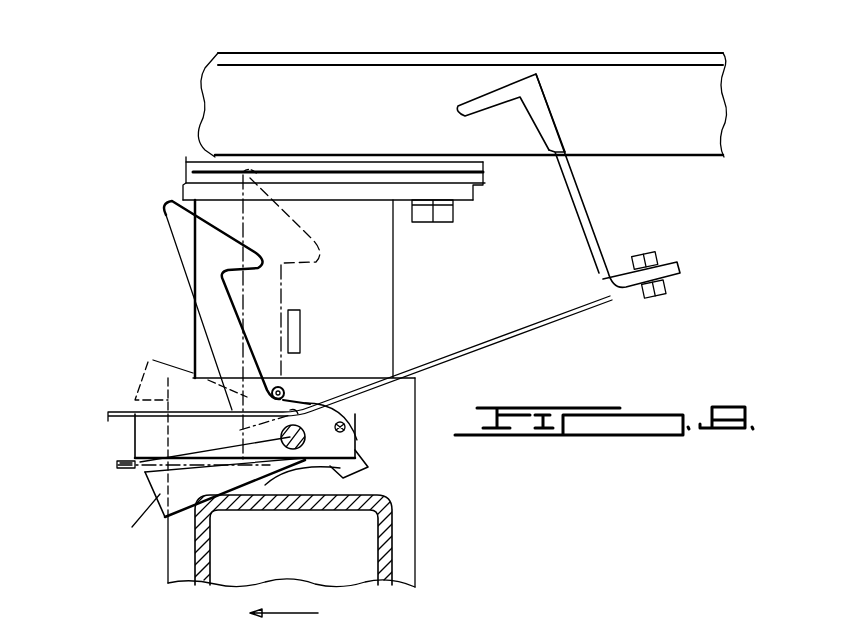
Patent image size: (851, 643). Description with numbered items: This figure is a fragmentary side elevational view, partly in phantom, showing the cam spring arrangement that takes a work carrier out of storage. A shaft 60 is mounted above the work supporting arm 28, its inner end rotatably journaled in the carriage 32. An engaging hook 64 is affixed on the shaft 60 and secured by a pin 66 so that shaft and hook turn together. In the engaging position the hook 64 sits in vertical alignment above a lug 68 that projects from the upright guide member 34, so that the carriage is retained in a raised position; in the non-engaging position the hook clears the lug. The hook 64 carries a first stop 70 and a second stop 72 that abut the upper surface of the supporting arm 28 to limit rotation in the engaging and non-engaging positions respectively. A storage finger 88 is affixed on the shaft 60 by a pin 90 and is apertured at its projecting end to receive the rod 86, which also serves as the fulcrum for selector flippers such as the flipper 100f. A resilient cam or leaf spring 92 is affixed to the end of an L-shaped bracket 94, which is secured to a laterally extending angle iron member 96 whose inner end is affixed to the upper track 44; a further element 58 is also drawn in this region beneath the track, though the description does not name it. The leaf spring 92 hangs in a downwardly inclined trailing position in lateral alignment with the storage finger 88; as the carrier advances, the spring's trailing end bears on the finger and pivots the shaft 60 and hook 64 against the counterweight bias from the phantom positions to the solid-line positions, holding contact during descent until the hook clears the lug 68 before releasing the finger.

The upper track 44 is at (705, 87).
The mounting plate 58 is at (475, 190).
The angle iron member 96 is at (478, 100).
The L-shaped bracket 94 is at (600, 243).
The upright guide member 34 is at (398, 265).
The engaging hook 64 is at (195, 278).
The pin 66 is at (286, 388).
The lug 68 is at (300, 335).
The leaf spring 92 is at (130, 465).
The shaft 60 is at (305, 440).
The pin 90 is at (352, 438).
The rod 86 is at (358, 416).
The first stop 70 is at (363, 477).
The storage finger 88 is at (137, 493).
The selector flipper 100f is at (120, 532).
The second stop 72 is at (262, 487).
The carriage 32 is at (418, 500).
The work supporting arm 28 is at (398, 563).